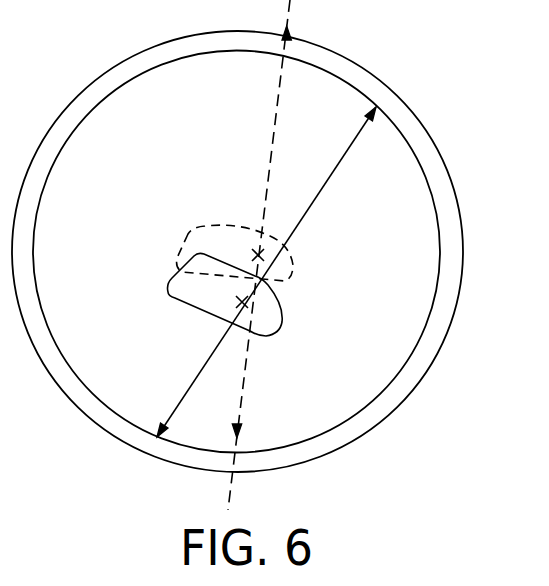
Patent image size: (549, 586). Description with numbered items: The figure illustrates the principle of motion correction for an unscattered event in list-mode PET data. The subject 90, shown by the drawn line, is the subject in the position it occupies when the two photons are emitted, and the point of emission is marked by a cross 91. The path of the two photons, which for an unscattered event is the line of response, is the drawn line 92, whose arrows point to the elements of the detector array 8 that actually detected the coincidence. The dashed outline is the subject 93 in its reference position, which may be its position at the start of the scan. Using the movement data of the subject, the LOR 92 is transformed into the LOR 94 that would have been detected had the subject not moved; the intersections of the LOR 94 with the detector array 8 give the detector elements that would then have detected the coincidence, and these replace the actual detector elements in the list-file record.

The detector array 8 is at (433, 143).
The subject 90 is at (282, 327).
The cross 91 is at (240, 307).
The LOR 92 is at (322, 190).
The subject in reference position 93 is at (185, 234).
The motion-corrected LOR 94 is at (272, 134).